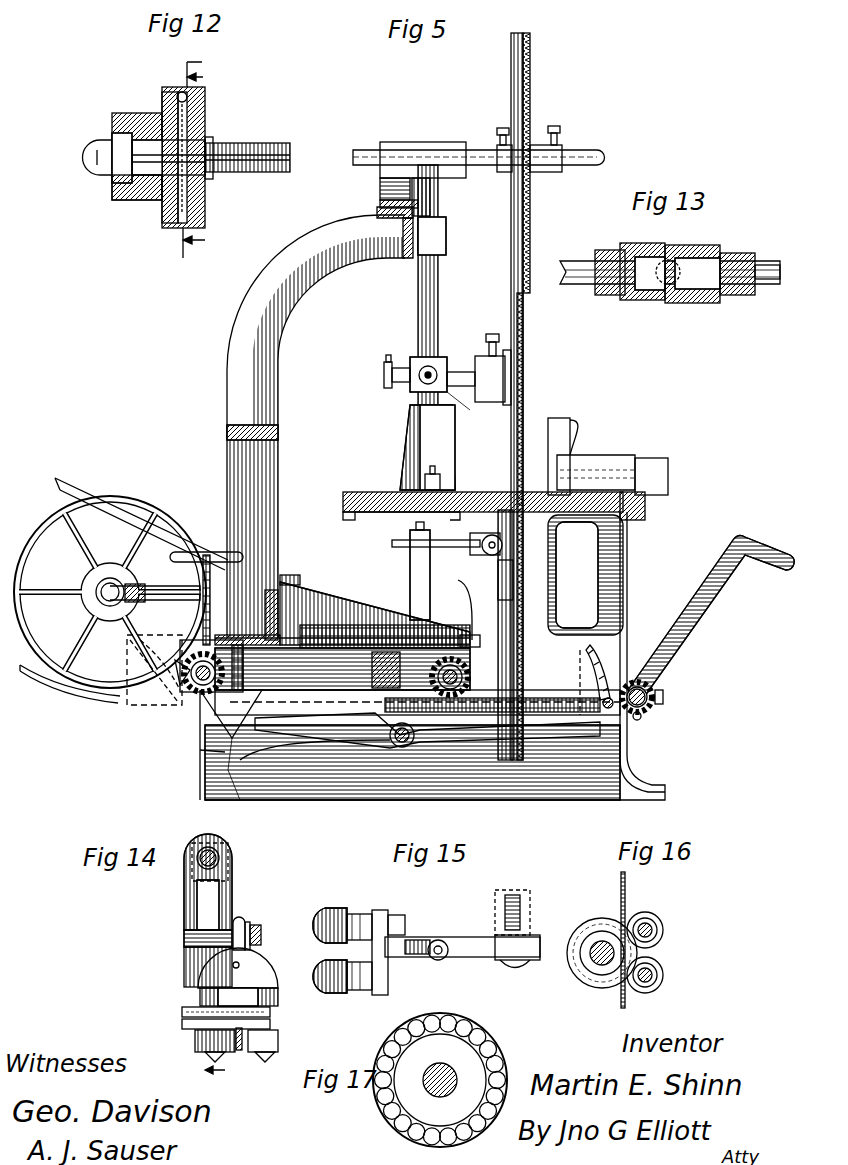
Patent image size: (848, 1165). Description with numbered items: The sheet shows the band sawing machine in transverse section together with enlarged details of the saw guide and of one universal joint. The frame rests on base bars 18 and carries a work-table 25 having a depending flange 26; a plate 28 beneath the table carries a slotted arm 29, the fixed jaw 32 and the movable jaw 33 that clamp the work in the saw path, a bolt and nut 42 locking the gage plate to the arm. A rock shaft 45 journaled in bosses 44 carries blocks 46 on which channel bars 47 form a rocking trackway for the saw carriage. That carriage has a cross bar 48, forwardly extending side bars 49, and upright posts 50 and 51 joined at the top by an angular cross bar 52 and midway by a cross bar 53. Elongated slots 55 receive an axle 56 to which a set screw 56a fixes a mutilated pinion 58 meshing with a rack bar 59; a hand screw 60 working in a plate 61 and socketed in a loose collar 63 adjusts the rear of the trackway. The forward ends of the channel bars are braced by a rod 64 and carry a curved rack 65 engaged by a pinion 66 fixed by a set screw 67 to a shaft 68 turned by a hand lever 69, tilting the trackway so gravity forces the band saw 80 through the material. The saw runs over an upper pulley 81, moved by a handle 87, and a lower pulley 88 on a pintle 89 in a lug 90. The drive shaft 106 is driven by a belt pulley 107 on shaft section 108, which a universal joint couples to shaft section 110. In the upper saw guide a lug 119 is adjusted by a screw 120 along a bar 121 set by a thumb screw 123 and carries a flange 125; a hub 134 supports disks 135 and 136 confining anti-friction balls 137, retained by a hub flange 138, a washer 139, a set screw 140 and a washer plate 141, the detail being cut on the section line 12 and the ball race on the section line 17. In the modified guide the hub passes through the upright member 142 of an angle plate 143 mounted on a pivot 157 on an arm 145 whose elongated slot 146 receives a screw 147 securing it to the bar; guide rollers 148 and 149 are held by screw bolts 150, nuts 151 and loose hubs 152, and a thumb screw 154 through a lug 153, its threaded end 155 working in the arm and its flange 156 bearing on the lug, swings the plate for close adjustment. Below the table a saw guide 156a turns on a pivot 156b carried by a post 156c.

In FIG. 5, the base bars 18 is at (423, 800).
In FIG. 5, the work-table 25 is at (628, 540).
In FIG. 5, the depending flange 26 is at (645, 510).
In FIG. 5, the plate 28 is at (560, 520).
In FIG. 5, the arm 29 is at (365, 494).
In FIG. 5, the fixed jaw 32 is at (408, 452).
In FIG. 5, the movable jaw 33 is at (578, 428).
In FIG. 5, the bolt and nut 42 is at (440, 466).
In FIG. 5, the bosses 44 is at (400, 745).
In FIG. 5, the rock shaft 45 is at (415, 736).
In FIG. 5, the blocks 46 is at (372, 722).
In FIG. 5, the channel bars 47 is at (130, 700).
In FIG. 5, the cross bar 48 is at (285, 605).
In FIG. 5, the side bars 49 is at (340, 630).
In FIG. 5, the post 50 is at (227, 460).
In FIG. 5, the post 51 is at (330, 268).
In FIG. 5, the angular cross bar 52 is at (402, 258).
In FIG. 5, the cross bar 53 is at (278, 428).
In FIG. 5, the elongated slots 55 is at (205, 700).
In FIG. 5, the axle 56 is at (196, 692).
In FIG. 5, the set screw 56a is at (182, 680).
In FIG. 5, the mutilated pinion 58 is at (342, 669).
In FIG. 5, the rack bar 59 is at (417, 696).
In FIG. 5, the hand screw 60 is at (204, 603).
In FIG. 5, the plate 61 is at (203, 627).
In FIG. 5, the loose collar 63 is at (135, 665).
In FIG. 5, the rod 64 is at (613, 708).
In FIG. 5, the curved rack 65 is at (605, 665).
In FIG. 5, the pinion 66 is at (642, 718).
In FIG. 5, the set screw 67 is at (664, 696).
In FIG. 5, the shaft 68 is at (648, 700).
In FIG. 5, the hand lever 69 is at (742, 545).
In FIG. 14, the band saw 80 is at (240, 1055).
In FIG. 16, the band saw 80 is at (619, 998).
In FIG. 5, the pulley 81 is at (525, 38).
In FIG. 5, the handle 87 is at (590, 152).
In FIG. 5, the pulley 88 is at (516, 618).
In FIG. 5, the pintle 89 is at (458, 582).
In FIG. 5, the lug 90 is at (440, 655).
In FIG. 5, the sectional drive shaft 106 is at (258, 800).
In FIG. 5, the belt pulley 107 is at (70, 522).
In FIG. 13, the shaft section 108 is at (765, 284).
In FIG. 13, the shaft section 110 is at (564, 286).
In FIG. 5, the lug 119 is at (418, 358).
In FIG. 5, the screw 120 is at (384, 362).
In FIG. 5, the bar 121 is at (440, 278).
In FIG. 15, the bar 121 is at (530, 895).
In FIG. 16, the bar 121 is at (590, 920).
In FIG. 5, the thumb screw 123 is at (446, 240).
In FIG. 5, the flange 125 is at (458, 394).
In FIG. 12, the hub 134 is at (212, 148).
In FIG. 12, the disk 135 is at (178, 92).
In FIG. 14, the disk 135 is at (195, 1034).
In FIG. 12, the disk 136 is at (206, 100).
In FIG. 14, the disk 136 is at (182, 1010).
In FIG. 12, the anti-friction balls 137 is at (162, 100).
In FIG. 14, the anti-friction balls 137 is at (182, 1024).
In FIG. 17, the anti-friction balls 137 is at (498, 1052).
In FIG. 12, the hub flange 138 is at (210, 176).
In FIG. 12, the washer 139 is at (128, 200).
In FIG. 12, the set screw 140 is at (99, 168).
In FIG. 12, the washer plate 141 is at (114, 128).
In FIG. 15, the upright member 142 is at (400, 960).
In FIG. 14, the angle plate 143 is at (265, 972).
In FIG. 14, the arm 145 is at (184, 945).
In FIG. 14, the elongated slot 146 is at (225, 840).
In FIG. 14, the screw 147 is at (220, 860).
In FIG. 15, the screw 147 is at (515, 966).
In FIG. 15, the lateral guide roller 148 is at (340, 906).
In FIG. 15, the lateral guide roller 149 is at (338, 1002).
In FIG. 15, the screw bolts 150 is at (406, 922).
In FIG. 15, the nuts 151 is at (385, 910).
In FIG. 15, the loose hubs 152 is at (365, 912).
In FIG. 14, the lug 153 is at (248, 922).
In FIG. 14, the thumb screw 154 is at (258, 926).
In FIG. 15, the thumb screw 154 is at (438, 961).
In FIG. 14, the screw-threaded end 155 is at (184, 935).
In FIG. 14, the flange 156 is at (240, 920).
In FIG. 5, the saw guide 156a is at (515, 573).
In FIG. 5, the pivot 156b is at (504, 544).
In FIG. 5, the post 156c is at (410, 556).
In FIG. 14, the pivot 157 is at (240, 962).
In FIG. 14, the section line 12 is at (215, 1080).
In FIG. 12, the section line 17 is at (189, 160).